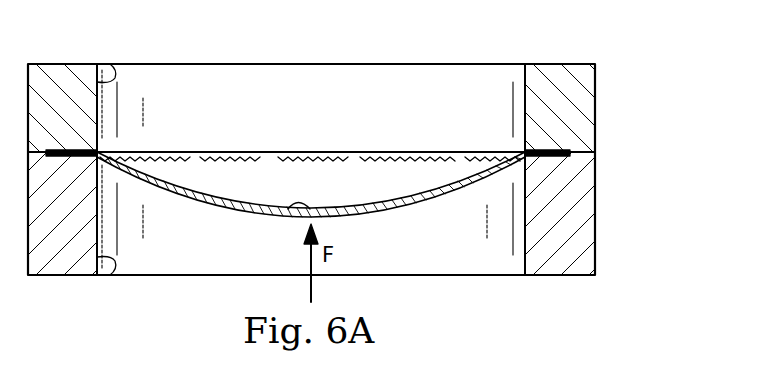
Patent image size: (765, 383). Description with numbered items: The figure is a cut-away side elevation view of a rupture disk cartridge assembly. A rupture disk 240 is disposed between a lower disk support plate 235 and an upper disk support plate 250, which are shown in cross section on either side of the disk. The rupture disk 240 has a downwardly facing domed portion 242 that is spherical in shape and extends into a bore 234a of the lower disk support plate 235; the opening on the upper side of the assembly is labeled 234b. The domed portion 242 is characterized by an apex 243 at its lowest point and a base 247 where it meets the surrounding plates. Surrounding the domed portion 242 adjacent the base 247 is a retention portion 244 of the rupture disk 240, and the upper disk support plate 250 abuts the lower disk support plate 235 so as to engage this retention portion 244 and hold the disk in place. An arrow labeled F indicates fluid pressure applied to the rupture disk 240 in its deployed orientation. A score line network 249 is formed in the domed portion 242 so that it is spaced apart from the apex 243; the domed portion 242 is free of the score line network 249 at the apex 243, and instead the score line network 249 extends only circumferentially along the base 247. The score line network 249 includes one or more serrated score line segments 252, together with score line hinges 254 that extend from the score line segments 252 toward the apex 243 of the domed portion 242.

The bore 234a is at (110, 275).
The upper clamping portion 234b is at (110, 64).
The lower disk support plate 235 is at (597, 217).
The rupture disk 240 is at (440, 201).
The domed portion 242 is at (373, 193).
The apex 243 is at (300, 212).
The retention portion 244 is at (597, 152).
The base 247 is at (523, 152).
The score line network 249 is at (389, 154).
The upper disk support plate 250 is at (597, 103).
The serrated score line segments 252 is at (290, 154).
The score line hinges 254 is at (356, 155).